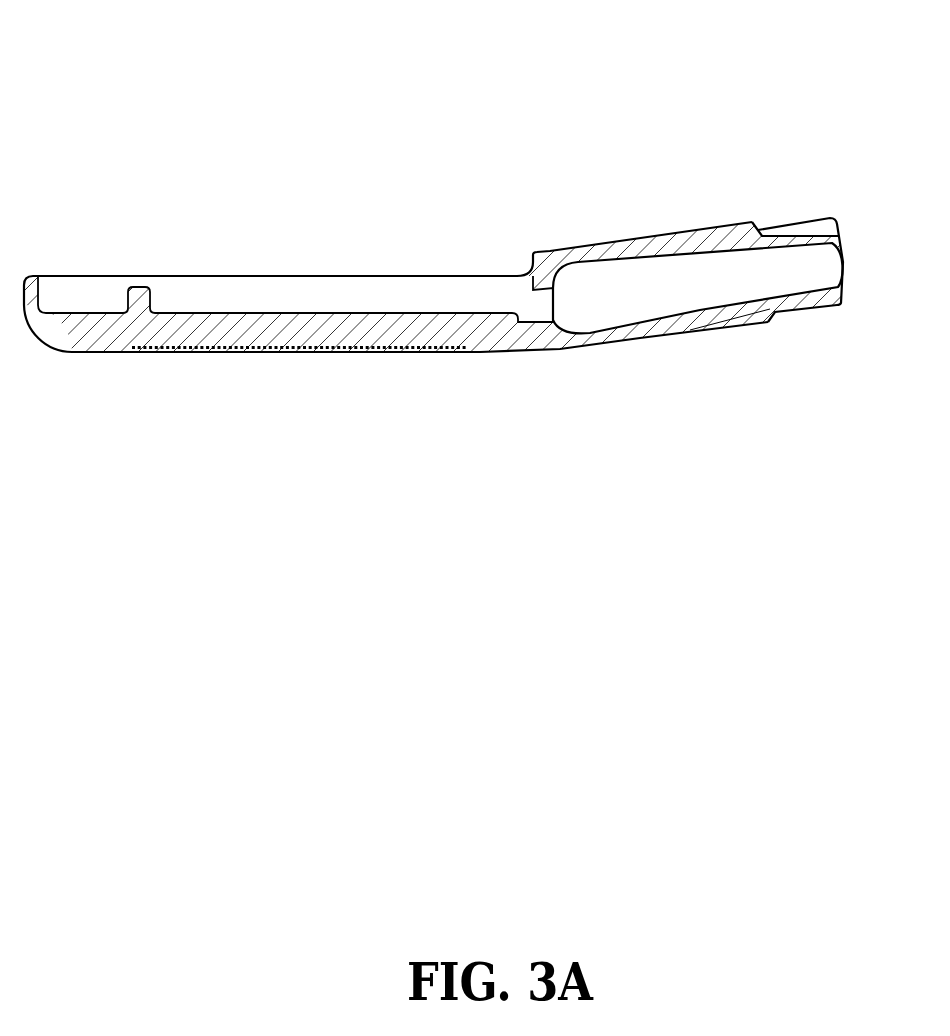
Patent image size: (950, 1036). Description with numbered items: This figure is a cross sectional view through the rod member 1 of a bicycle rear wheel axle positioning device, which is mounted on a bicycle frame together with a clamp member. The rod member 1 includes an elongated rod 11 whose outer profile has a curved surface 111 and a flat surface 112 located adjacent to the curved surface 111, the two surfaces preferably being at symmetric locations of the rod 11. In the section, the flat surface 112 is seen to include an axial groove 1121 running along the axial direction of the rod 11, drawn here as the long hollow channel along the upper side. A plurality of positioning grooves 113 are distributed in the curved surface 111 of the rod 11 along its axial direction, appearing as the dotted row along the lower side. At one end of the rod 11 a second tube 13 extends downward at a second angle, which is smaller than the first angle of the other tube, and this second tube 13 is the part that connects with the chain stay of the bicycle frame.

The rod member 1 is at (475, 245).
The rod 11 is at (349, 335).
The curved surface 111 is at (113, 352).
The flat surface 112 is at (202, 277).
The axial groove 1121 is at (295, 300).
The positioning grooves 113 is at (242, 353).
The second tube 13 is at (816, 230).